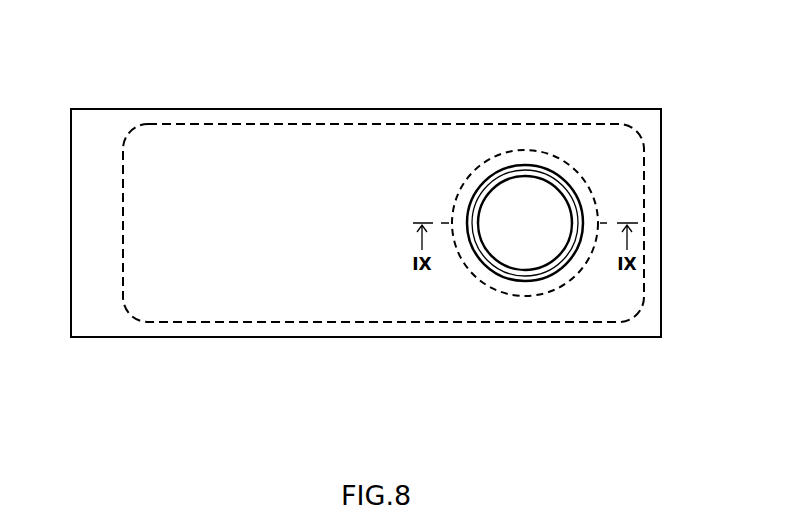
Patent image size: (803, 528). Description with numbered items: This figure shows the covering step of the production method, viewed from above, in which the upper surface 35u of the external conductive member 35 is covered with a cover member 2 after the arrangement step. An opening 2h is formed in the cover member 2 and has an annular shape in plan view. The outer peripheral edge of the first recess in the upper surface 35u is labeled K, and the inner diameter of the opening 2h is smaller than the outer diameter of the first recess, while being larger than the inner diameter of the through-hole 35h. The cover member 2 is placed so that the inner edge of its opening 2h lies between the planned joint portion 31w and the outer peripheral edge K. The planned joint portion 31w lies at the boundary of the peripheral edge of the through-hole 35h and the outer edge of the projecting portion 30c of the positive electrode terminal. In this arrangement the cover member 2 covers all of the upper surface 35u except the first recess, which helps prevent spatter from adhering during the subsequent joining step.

The cover member 2 is at (556, 105).
The opening 2h is at (556, 172).
The outer peripheral edge of the first recess K is at (478, 164).
The external conductive member 35 is at (211, 292).
The upper surface 35u is at (323, 288).
The through-hole 35h is at (498, 265).
The planned joint portion 31w is at (523, 268).
The projecting portion 30c is at (543, 230).